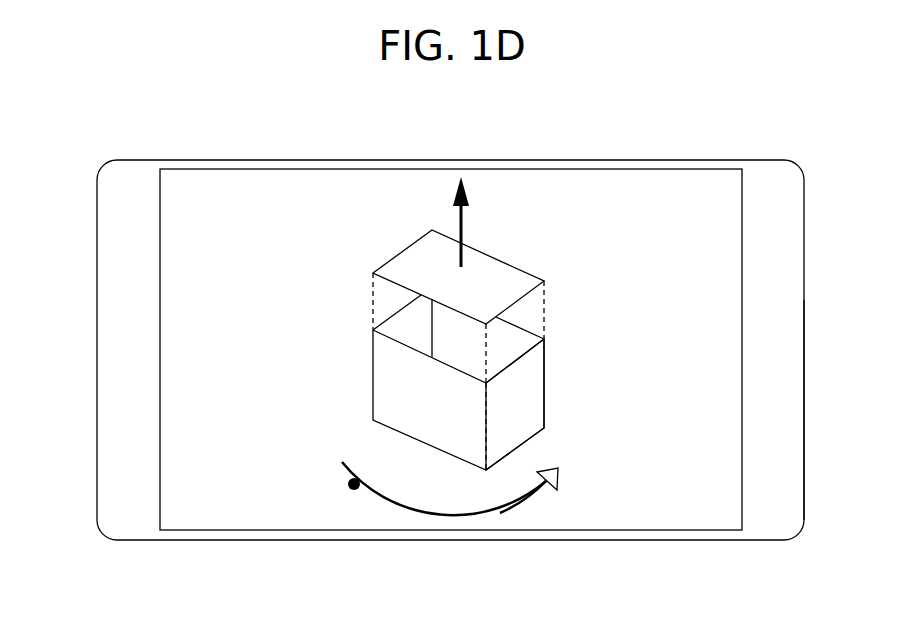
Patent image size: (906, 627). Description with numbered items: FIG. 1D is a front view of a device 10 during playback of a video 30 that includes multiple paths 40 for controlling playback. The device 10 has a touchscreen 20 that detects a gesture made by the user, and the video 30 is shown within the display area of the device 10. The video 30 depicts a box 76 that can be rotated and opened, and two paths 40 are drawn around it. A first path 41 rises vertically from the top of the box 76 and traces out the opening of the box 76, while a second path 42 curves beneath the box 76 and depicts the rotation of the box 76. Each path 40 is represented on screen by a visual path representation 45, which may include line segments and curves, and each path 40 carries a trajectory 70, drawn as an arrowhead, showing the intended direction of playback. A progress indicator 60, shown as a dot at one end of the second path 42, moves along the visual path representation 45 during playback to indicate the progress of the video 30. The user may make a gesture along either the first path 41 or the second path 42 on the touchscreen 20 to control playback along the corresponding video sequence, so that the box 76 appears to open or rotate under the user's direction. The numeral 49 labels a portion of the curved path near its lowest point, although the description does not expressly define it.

The device 10 is at (62, 206).
The touchscreen 20 is at (720, 357).
The video 30 is at (697, 210).
The path 40 is at (455, 228).
The first path 41 is at (457, 250).
The second path 42 is at (525, 502).
The visual path representation 45 is at (465, 232).
The movement path 49 is at (410, 515).
The progress indicator 60 is at (354, 490).
The trajectory 70 is at (466, 187).
The box 76 is at (373, 392).